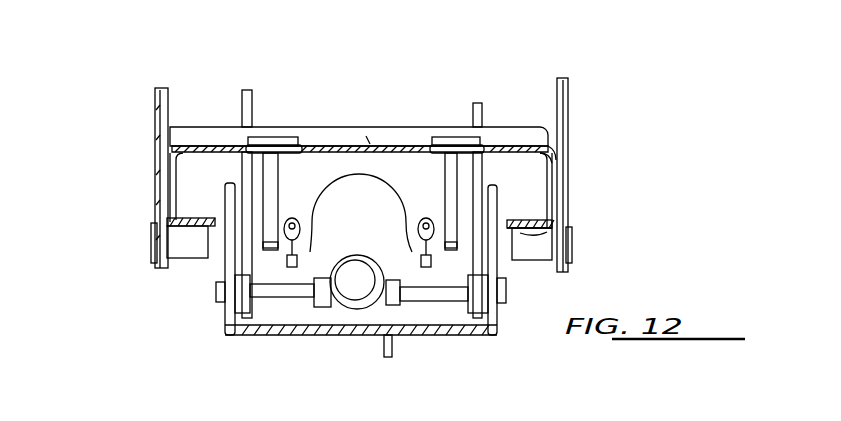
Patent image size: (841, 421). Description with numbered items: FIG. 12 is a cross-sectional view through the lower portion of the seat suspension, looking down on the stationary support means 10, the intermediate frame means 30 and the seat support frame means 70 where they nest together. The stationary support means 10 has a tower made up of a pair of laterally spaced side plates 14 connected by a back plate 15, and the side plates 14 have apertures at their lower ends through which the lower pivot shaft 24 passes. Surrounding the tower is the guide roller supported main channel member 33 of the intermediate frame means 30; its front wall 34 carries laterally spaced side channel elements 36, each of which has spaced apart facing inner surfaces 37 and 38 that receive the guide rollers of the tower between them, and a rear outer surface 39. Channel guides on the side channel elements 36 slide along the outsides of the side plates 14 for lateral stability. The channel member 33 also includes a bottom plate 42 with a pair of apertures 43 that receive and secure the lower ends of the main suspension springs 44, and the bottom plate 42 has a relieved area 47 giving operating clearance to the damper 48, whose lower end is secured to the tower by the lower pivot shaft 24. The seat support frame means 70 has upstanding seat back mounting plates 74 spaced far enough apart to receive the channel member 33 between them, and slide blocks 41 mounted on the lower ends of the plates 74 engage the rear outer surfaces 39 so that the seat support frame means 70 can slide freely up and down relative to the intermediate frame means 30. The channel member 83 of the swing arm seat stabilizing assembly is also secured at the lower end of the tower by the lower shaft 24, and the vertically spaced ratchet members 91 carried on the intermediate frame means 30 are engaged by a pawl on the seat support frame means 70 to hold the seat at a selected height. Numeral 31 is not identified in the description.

The stationary support means 10 is at (225, 334).
The side plates 14 is at (223, 320).
The back plate 15 is at (390, 343).
The lower pivot shaft 24 is at (444, 302).
The intermediate frame means 30 is at (196, 124).
The right upright post 31 is at (508, 137).
The main channel member 33 is at (380, 148).
The front wall 34 is at (364, 127).
The side channel elements 36 is at (162, 187).
The inner surface 37 is at (567, 158).
The inner surface 38 is at (567, 199).
The rear outer surface 39 is at (568, 232).
The slide blocks 41 is at (187, 237).
The bottom plate 42 is at (318, 162).
The apertures 43 is at (412, 222).
The main suspension springs 44 is at (290, 268).
The relieved area 47 is at (380, 188).
The damper 48 is at (360, 305).
The seat support frame means 70 is at (152, 103).
The seat back mounting plates 74 is at (157, 133).
The channel member 83 is at (252, 98).
The ratchet members 91 is at (282, 140).